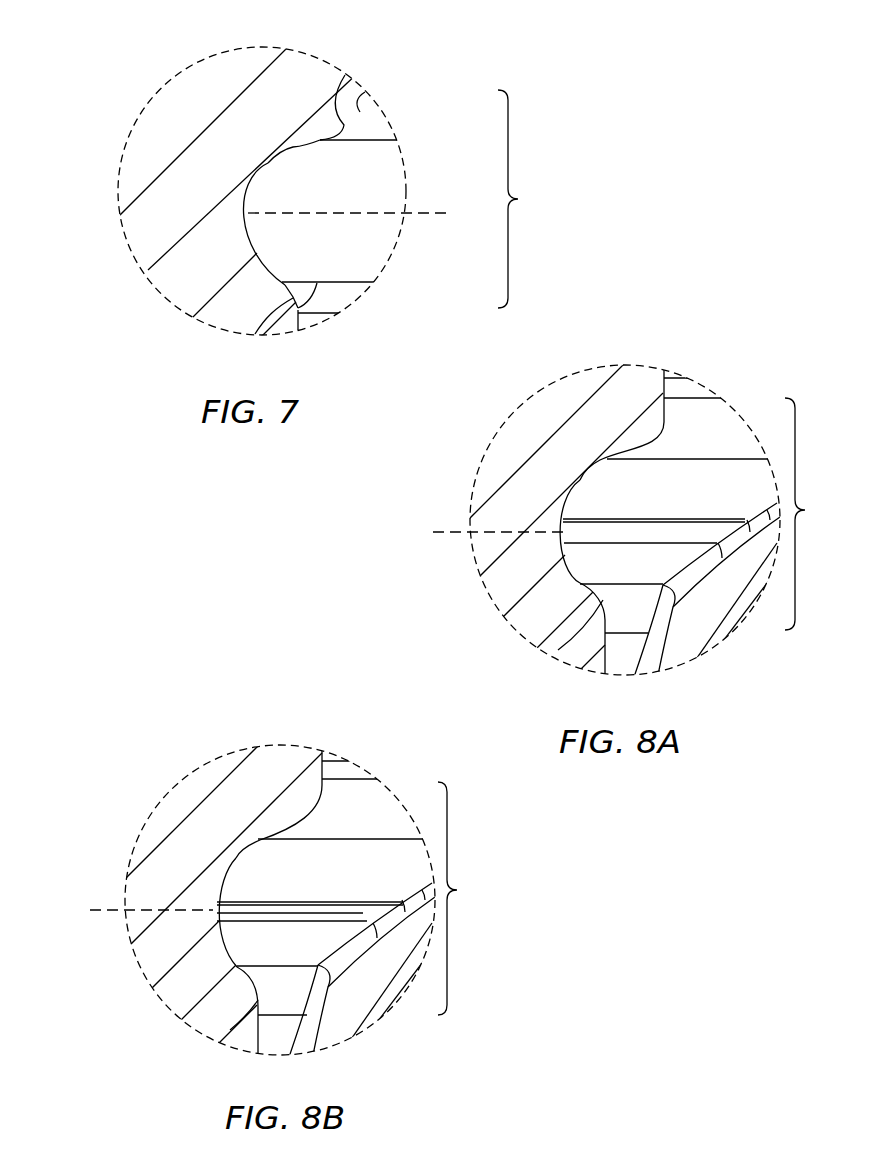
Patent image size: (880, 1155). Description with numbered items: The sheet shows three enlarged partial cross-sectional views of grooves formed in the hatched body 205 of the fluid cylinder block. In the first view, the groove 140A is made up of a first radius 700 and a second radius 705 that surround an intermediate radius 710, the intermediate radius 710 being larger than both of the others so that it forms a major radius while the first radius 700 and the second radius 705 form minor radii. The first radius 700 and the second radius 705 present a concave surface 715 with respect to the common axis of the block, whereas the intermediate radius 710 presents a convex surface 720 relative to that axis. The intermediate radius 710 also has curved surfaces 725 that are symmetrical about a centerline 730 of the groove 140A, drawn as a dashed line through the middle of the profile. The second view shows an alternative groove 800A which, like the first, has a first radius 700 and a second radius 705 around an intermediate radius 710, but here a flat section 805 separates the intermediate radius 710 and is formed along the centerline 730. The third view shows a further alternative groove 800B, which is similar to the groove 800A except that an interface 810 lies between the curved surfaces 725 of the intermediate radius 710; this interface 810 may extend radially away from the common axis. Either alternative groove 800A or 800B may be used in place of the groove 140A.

In FIG. 7, the rail body 205 is at (160, 98).
In FIG. 8A, the rail body 205 is at (590, 378).
In FIG. 8B, the rail body 205 is at (207, 762).
In FIG. 7, the first radius 700 is at (345, 75).
In FIG. 7, the second radius 705 is at (255, 334).
In FIG. 8A, the second radius 705 is at (558, 650).
In FIG. 8B, the second radius 705 is at (230, 1030).
In FIG. 7, the intermediate radius 710 is at (293, 148).
In FIG. 8A, the intermediate radius 710 is at (588, 480).
In FIG. 8B, the intermediate radius 710 is at (243, 860).
In FIG. 7, the concave surface 715 is at (360, 112).
In FIG. 8A, the concave surface 715 is at (664, 422).
In FIG. 8B, the concave surface 715 is at (317, 818).
In FIG. 7, the convex surface 720 is at (249, 183).
In FIG. 7, the curved surfaces 725 is at (264, 168).
In FIG. 8A, the curved surfaces 725 is at (596, 464).
In FIG. 8B, the curved surfaces 725 is at (243, 850).
In FIG. 7, the centerline 730 is at (424, 212).
In FIG. 8A, the centerline 730 is at (455, 533).
In FIG. 8B, the centerline 730 is at (95, 912).
In FIG. 7, the groove 140A is at (535, 199).
In FIG. 8A, the flat section 805 is at (572, 520).
In FIG. 8B, the flat section 805 is at (310, 911).
In FIG. 8A, the groove 800A is at (819, 514).
In FIG. 8B, the interface 810 is at (203, 894).
In FIG. 8B, the groove 800B is at (473, 898).